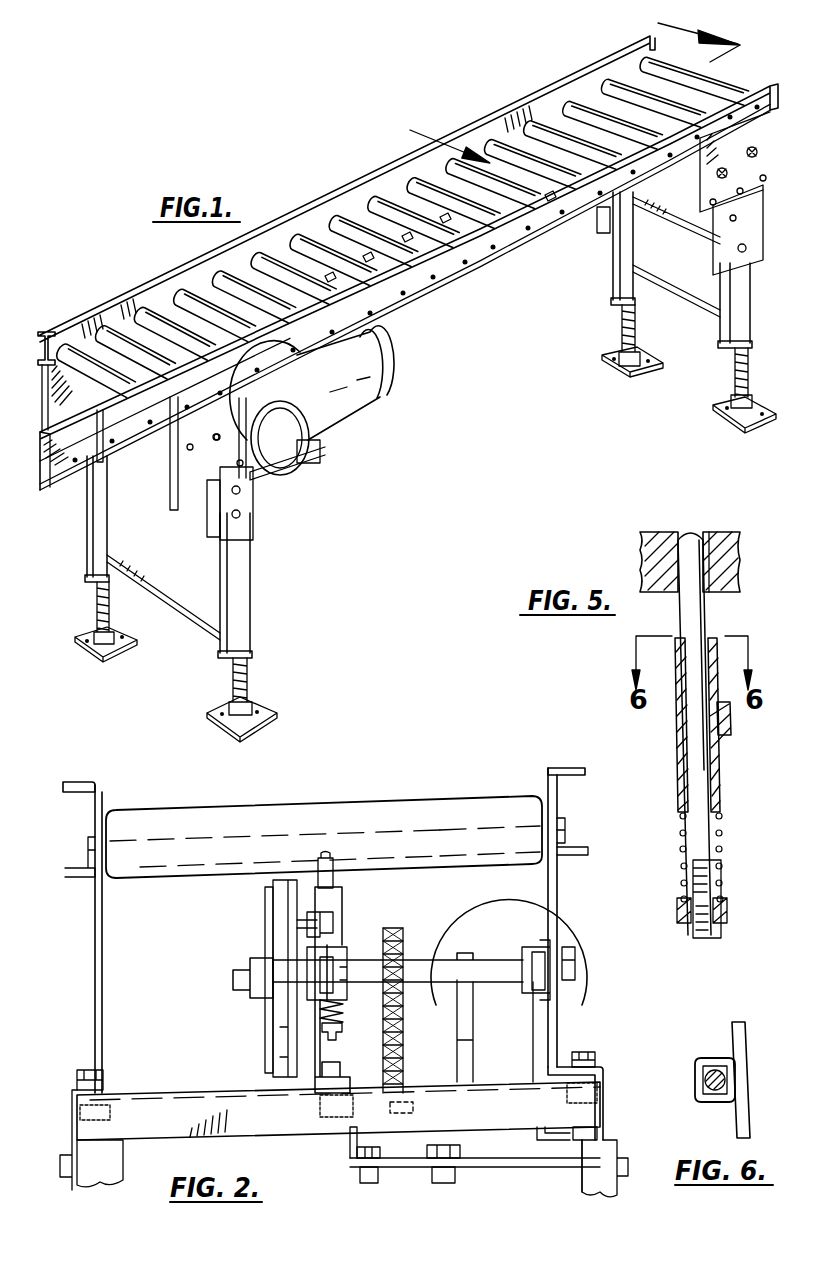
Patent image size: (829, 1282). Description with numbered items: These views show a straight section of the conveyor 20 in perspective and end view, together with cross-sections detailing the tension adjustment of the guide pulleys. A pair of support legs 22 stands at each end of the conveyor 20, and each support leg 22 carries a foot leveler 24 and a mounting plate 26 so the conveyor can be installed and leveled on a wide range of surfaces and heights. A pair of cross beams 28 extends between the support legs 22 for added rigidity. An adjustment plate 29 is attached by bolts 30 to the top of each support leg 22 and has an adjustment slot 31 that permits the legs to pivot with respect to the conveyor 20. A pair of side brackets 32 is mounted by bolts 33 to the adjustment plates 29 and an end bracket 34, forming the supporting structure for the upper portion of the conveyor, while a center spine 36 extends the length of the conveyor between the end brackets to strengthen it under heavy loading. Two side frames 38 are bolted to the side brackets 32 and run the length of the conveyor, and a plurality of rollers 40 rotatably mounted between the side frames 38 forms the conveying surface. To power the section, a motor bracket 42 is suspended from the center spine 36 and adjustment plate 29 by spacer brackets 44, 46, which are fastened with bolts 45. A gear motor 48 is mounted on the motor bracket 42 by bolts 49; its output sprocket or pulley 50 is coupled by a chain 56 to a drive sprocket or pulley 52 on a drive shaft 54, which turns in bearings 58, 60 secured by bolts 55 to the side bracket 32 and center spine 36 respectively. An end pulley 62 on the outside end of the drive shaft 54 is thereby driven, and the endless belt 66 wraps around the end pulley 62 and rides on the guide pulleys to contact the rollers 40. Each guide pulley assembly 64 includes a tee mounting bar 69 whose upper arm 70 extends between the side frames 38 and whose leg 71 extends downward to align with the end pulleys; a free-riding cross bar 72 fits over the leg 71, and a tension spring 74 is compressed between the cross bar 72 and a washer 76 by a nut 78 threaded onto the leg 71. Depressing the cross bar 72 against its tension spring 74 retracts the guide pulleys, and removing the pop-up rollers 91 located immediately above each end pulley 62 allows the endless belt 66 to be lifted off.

In FIG. 1, the conveyor 20 is at (288, 189).
In FIG. 1, the support legs 22 is at (87, 540).
In FIG. 1, the foot leveler 24 is at (97, 603).
In FIG. 1, the mounting plate 26 is at (97, 657).
In FIG. 1, the cross beams 28 is at (170, 595).
In FIG. 1, the adjustment plate 29 is at (595, 236).
In FIG. 2, the adjustment plate 29 is at (77, 1190).
In FIG. 1, the bolts 30 is at (253, 560).
In FIG. 2, the bolts 30 is at (620, 1143).
In FIG. 1, the adjustment slot 31 is at (255, 503).
In FIG. 1, the side brackets 32 is at (57, 365).
In FIG. 2, the side brackets 32 is at (104, 958).
In FIG. 1, the bolts 33 is at (240, 468).
In FIG. 2, the bolts 33 is at (87, 1067).
In FIG. 1, the end bracket 34 is at (83, 478).
In FIG. 1, the center spine 36 is at (474, 268).
In FIG. 1, the side frames 38 is at (160, 280).
In FIG. 2, the side frames 38 is at (102, 792).
In FIG. 1, the rollers 40 is at (353, 213).
In FIG. 2, the rollers 40 is at (448, 810).
In FIG. 1, the motor bracket 42 is at (317, 462).
In FIG. 2, the motor bracket 42 is at (472, 1170).
In FIG. 2, the spacer bracket 44 is at (350, 1157).
In FIG. 2, the bolts 45 is at (323, 1110).
In FIG. 2, the spacer bracket 46 is at (560, 1160).
In FIG. 1, the gear motor 48 is at (385, 373).
In FIG. 2, the gear motor 48 is at (570, 930).
In FIG. 1, the bolts 49 is at (317, 447).
In FIG. 2, the bolts 49 is at (440, 1187).
In FIG. 2, the output sprocket or pulley 50 is at (393, 1057).
In FIG. 2, the drive sprocket or pulley 52 is at (397, 930).
In FIG. 2, the drive shaft 54 is at (462, 957).
In FIG. 1, the bolts 55 is at (218, 437).
In FIG. 2, the bolts 55 is at (333, 967).
In FIG. 2, the chain 56 is at (383, 1023).
In FIG. 2, the bearing 58 is at (540, 933).
In FIG. 2, the bearing 60 is at (317, 987).
In FIG. 2, the end pulley 62 is at (267, 910).
In FIG. 1, the guide pulley assembly 64 is at (330, 273).
In FIG. 2, the endless belt 66 is at (273, 933).
In FIG. 1, the tee mounting bar 69 is at (228, 268).
In FIG. 2, the tee mounting bar 69 is at (410, 826).
In FIG. 5, the tee mounting bar 69 is at (659, 528).
In FIG. 2, the upper arm 70 is at (300, 832).
In FIG. 5, the upper arm 70 is at (714, 535).
In FIG. 2, the leg 71 is at (340, 877).
In FIG. 5, the leg 71 is at (706, 617).
In FIG. 6, the leg 71 is at (695, 1083).
In FIG. 2, the cross bar 72 is at (333, 897).
In FIG. 5, the cross bar 72 is at (677, 772).
In FIG. 6, the cross bar 72 is at (750, 1062).
In FIG. 5, the tension spring 74 is at (683, 842).
In FIG. 5, the washer 76 is at (680, 907).
In FIG. 5, the nut 78 is at (692, 925).
In FIG. 1, the pop-up rollers 91 is at (112, 343).